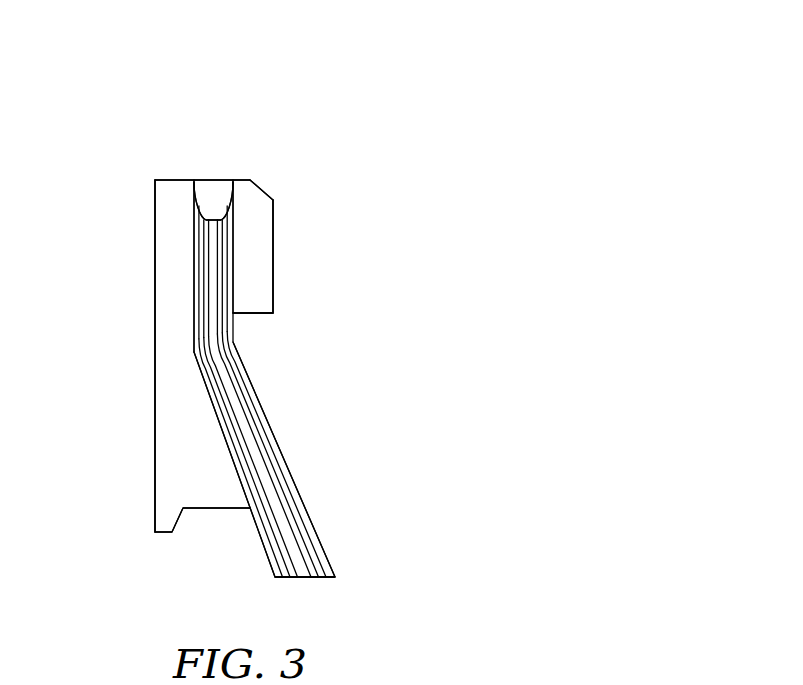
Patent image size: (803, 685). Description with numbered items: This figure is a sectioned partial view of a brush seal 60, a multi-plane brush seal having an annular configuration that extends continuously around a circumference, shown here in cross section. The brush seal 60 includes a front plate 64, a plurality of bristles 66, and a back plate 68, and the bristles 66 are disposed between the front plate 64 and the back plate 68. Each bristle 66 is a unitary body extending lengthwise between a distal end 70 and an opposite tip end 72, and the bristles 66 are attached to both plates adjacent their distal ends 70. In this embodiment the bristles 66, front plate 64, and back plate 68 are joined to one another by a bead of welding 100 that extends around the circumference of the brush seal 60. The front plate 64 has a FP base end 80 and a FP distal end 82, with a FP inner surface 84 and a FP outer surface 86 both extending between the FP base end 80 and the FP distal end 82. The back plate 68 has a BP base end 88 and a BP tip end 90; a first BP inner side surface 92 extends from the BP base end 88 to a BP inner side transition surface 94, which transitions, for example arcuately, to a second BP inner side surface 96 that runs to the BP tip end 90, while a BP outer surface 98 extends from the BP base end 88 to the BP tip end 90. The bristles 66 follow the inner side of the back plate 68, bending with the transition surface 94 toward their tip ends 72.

The brush seal 60 is at (342, 132).
The front plate 64 is at (308, 241).
The bristles 66 is at (318, 481).
The back plate 68 is at (120, 468).
The distal end 70 is at (223, 190).
The tip end 72 is at (306, 578).
The FP base end 80 is at (250, 181).
The FP distal end 82 is at (252, 314).
The FP inner surface 84 is at (233, 257).
The FP outer surface 86 is at (273, 298).
The BP base end 88 is at (172, 180).
The BP tip end 90 is at (215, 508).
The first BP inner side surface 92 is at (210, 262).
The BP inner side transition surface 94 is at (194, 368).
The second BP inner side surface 96 is at (252, 467).
The BP outer surface 98 is at (155, 434).
The bead of welding 100 is at (202, 192).